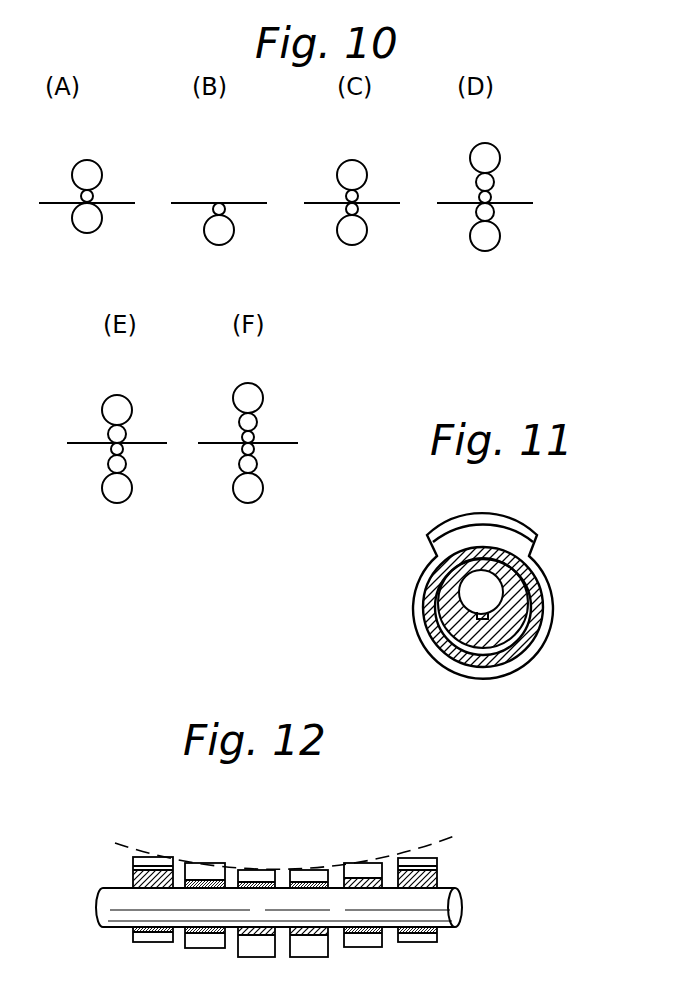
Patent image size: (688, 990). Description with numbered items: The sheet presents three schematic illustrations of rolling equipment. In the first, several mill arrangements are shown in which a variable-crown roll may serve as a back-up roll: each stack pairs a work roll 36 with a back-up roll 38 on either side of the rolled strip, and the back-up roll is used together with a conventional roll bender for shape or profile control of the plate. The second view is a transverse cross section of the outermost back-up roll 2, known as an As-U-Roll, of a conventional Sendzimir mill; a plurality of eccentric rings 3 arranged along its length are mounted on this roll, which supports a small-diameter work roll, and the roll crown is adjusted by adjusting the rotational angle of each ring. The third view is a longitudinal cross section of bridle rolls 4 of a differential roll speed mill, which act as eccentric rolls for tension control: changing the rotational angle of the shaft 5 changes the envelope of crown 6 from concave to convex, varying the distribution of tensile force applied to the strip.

In FIG. 10, the work roll 36 is at (90, 195).
In FIG. 10, the back-up roll 38 is at (92, 171).
In FIG. 11, the outermost back-up roll 2 is at (557, 601).
In FIG. 11, the eccentric ring 3 is at (505, 633).
In FIG. 12, the bridle roll 4 is at (320, 862).
In FIG. 12, the shaft 5 is at (446, 888).
In FIG. 12, the envelope of crown 6 is at (118, 842).